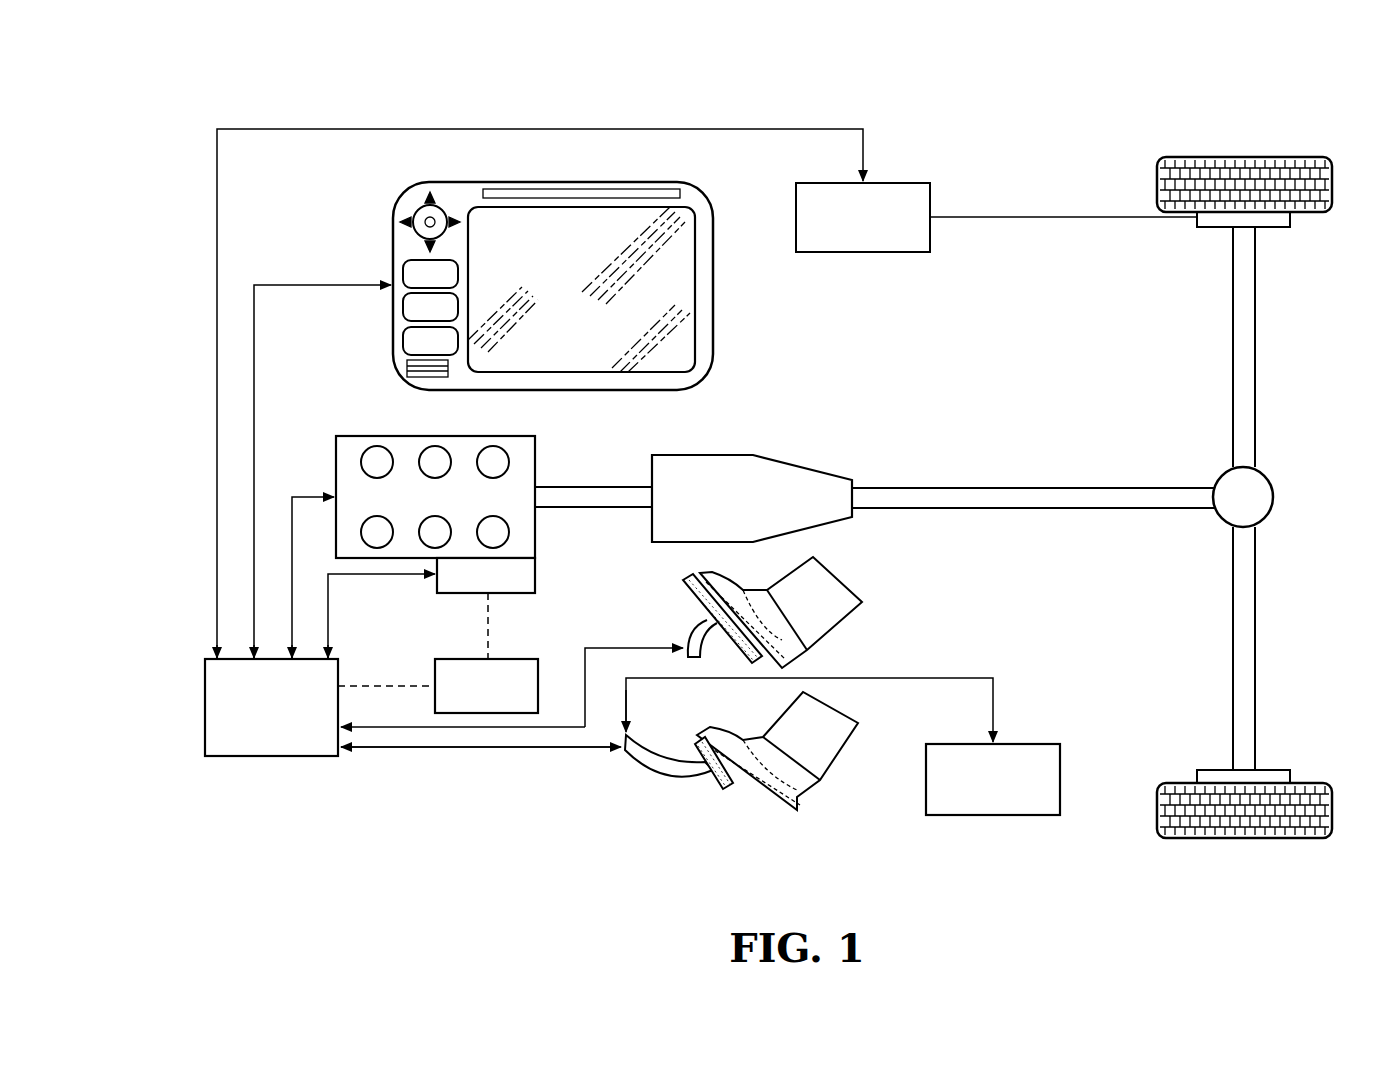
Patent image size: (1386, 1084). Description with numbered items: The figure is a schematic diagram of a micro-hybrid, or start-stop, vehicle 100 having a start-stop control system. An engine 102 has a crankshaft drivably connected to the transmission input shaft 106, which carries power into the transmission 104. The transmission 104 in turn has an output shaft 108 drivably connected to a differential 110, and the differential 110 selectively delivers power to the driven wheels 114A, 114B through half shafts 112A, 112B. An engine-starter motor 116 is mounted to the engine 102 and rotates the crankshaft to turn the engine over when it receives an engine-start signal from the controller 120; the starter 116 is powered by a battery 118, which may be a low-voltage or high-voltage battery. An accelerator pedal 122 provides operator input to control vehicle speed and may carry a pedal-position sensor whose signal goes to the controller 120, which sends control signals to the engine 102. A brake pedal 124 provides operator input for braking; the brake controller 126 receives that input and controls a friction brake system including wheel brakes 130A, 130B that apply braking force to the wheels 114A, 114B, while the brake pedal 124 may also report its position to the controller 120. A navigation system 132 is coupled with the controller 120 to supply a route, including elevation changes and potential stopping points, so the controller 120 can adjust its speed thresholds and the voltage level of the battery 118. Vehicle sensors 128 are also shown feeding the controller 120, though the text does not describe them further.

The micro-hybrid vehicle 100 is at (222, 100).
The engine 102 is at (435, 436).
The transmission 104 is at (737, 455).
The transmission input shaft 106 is at (565, 487).
The output shaft 108 is at (1030, 487).
The differential 110 is at (1272, 497).
The half shaft 112A is at (1255, 345).
The half shaft 112B is at (1255, 655).
The driven wheel 114A is at (1332, 183).
The driven wheel 114B is at (1332, 812).
The engine-starter motor 116 is at (535, 580).
The battery 118 is at (470, 659).
The controller 120 is at (205, 705).
The accelerator pedal 122 is at (705, 605).
The brake pedal 124 is at (717, 785).
The brake controller 126 is at (1060, 780).
The vehicle sensors 128 is at (930, 200).
The wheel brake 130A is at (1272, 227).
The wheel brake 130B is at (1272, 770).
The navigation system 132 is at (713, 285).